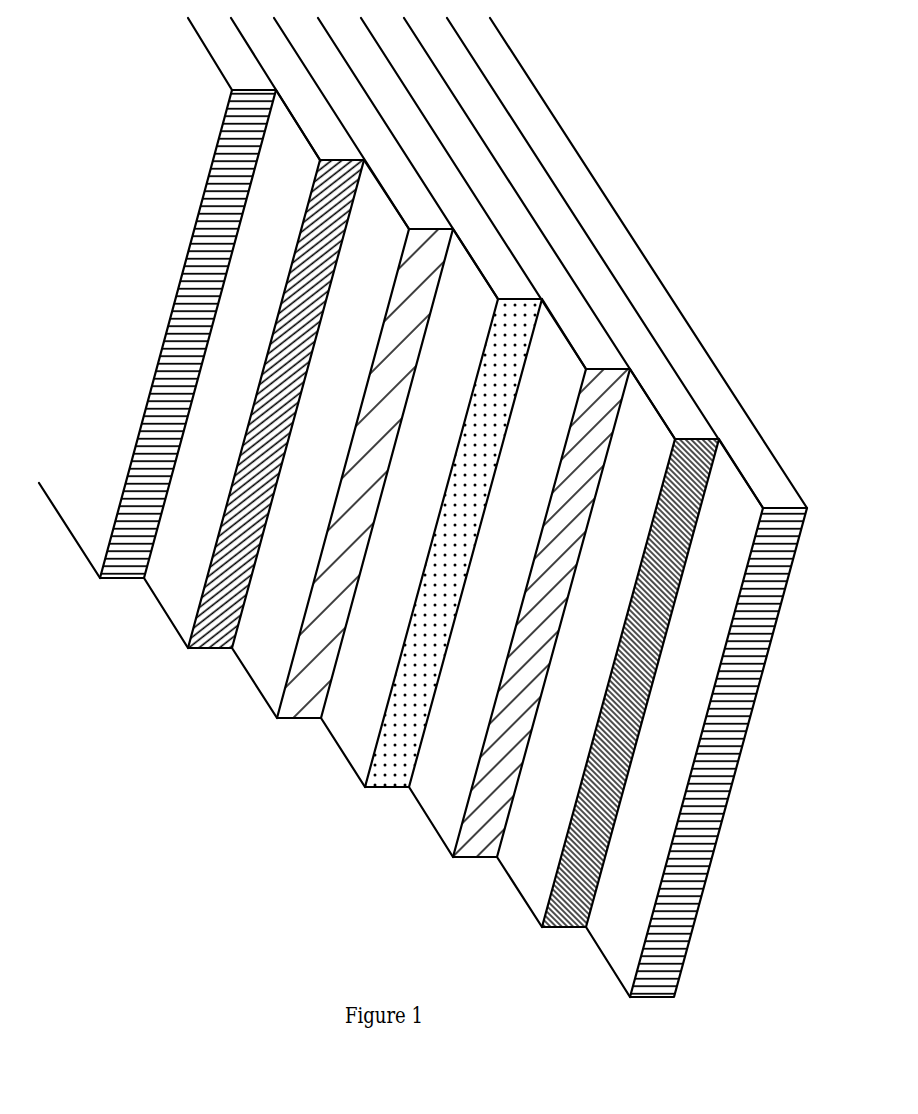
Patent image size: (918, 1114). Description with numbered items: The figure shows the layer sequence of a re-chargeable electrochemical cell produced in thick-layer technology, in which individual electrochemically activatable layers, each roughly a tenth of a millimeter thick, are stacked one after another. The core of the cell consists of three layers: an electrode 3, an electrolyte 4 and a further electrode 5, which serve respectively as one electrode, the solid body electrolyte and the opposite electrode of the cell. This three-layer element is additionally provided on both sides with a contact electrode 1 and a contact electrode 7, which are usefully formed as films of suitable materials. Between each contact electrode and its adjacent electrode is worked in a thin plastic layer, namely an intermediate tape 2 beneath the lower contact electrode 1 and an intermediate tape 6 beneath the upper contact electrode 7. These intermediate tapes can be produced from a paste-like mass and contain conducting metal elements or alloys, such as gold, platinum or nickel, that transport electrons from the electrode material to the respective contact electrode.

The contact electrode 1 is at (157, 320).
The intermediate tape 2 is at (246, 356).
The electrode 3 is at (336, 391).
The electrolyte 4 is at (426, 426).
The electrode 5 is at (495, 458).
The intermediate tape 6 is at (561, 492).
The contact electrode 7 is at (627, 524).